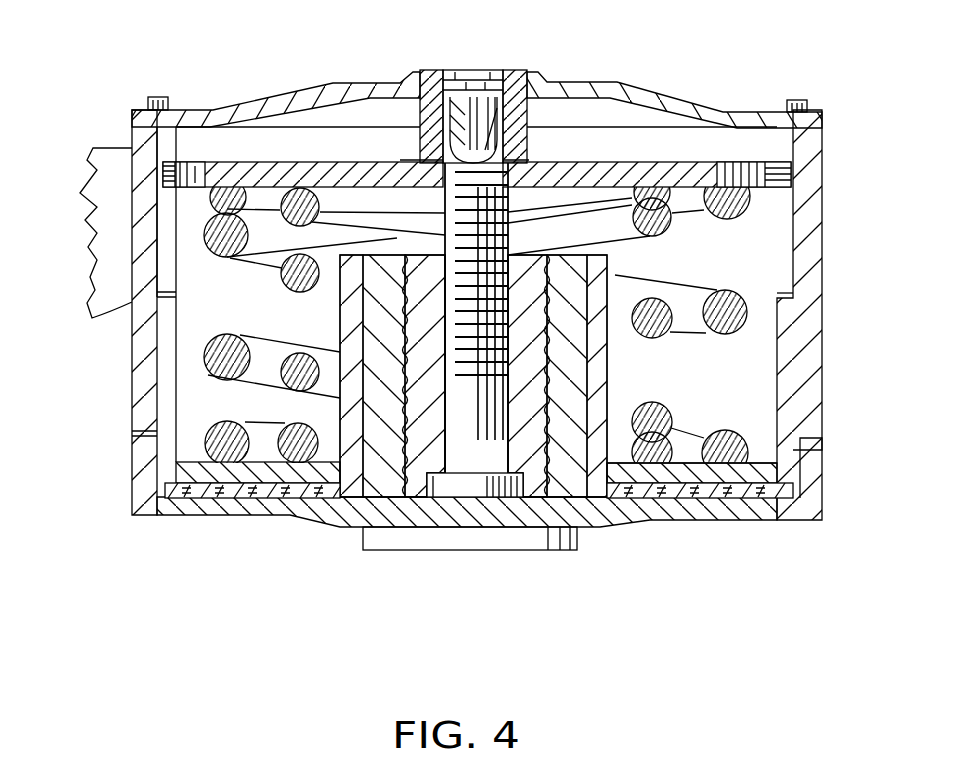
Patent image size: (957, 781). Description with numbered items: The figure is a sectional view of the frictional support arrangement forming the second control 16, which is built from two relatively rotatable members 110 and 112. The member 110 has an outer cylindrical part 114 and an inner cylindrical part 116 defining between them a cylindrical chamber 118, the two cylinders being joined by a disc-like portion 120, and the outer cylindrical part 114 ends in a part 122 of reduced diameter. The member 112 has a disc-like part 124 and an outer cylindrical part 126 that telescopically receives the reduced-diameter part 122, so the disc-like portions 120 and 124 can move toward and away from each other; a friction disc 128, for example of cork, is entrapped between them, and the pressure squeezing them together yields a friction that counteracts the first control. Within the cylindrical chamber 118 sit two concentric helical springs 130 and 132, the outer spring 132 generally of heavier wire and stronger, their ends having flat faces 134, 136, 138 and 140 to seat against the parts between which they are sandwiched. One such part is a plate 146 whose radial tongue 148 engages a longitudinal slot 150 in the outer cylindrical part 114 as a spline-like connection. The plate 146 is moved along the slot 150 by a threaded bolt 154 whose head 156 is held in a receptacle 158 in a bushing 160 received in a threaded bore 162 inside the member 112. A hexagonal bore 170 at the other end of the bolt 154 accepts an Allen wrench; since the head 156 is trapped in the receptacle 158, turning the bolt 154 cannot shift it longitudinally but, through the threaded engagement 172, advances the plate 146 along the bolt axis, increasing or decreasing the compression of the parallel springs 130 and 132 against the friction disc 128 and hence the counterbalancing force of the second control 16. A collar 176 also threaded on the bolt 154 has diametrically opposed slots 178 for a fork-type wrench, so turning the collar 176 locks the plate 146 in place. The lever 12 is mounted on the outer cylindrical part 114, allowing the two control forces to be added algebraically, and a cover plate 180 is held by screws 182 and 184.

The lever 12 is at (111, 141).
The second control 16 is at (287, 533).
The relatively rotatable member 110 is at (476, 315).
The relatively rotatable member 112 is at (513, 533).
The outer cylindrical part 114 is at (813, 367).
The inner cylindrical part 116 is at (615, 277).
The cylindrical chamber 118 is at (745, 352).
The disc-like portion 120 is at (479, 541).
The part of reduced diameter 122 is at (803, 449).
The disc-like part 124 is at (227, 510).
The outer cylindrical part 126 is at (140, 462).
The friction disc 128 is at (373, 395).
The helical spring 130 is at (240, 335).
The helical spring 132 is at (330, 342).
The flat face 134 is at (477, 157).
The flat face 136 is at (662, 165).
The flat face 138 is at (728, 486).
The flat face 140 is at (645, 470).
The plate 146 is at (320, 185).
The tongue 148 is at (180, 169).
The slot 150 is at (177, 276).
The threaded member 154 is at (513, 234).
The head 156 is at (467, 488).
The receptacle 158 is at (430, 483).
The bushing 160 is at (514, 376).
The threaded bore 162 is at (592, 372).
The hexagonal bore 170 is at (422, 112).
The threaded engagement 172 is at (440, 164).
The collar 176 is at (481, 86).
The diametrically opposed slots 178 is at (482, 70).
The cover plate 180 is at (643, 84).
The screw 182 is at (797, 100).
The screw 184 is at (172, 80).